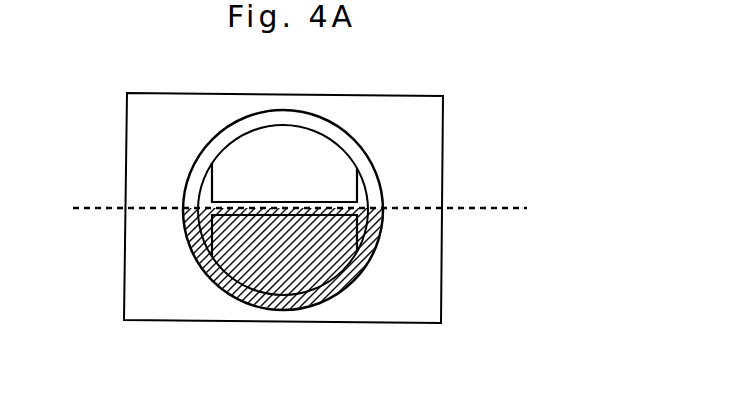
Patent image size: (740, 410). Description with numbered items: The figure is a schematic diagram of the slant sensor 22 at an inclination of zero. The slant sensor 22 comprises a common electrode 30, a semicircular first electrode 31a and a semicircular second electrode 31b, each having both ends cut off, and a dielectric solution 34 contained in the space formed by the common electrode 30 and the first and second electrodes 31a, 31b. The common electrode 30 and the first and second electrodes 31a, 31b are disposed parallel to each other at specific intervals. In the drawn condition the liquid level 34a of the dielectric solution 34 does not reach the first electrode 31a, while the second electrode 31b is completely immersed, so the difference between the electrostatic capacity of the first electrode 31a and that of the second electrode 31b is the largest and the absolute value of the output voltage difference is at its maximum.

The slant sensor 22 is at (417, 77).
The common electrode 30 is at (193, 162).
The first electrode 31a is at (308, 152).
The second electrode 31b is at (312, 276).
The dielectric solution 34 is at (373, 237).
The liquid level 34a is at (498, 209).